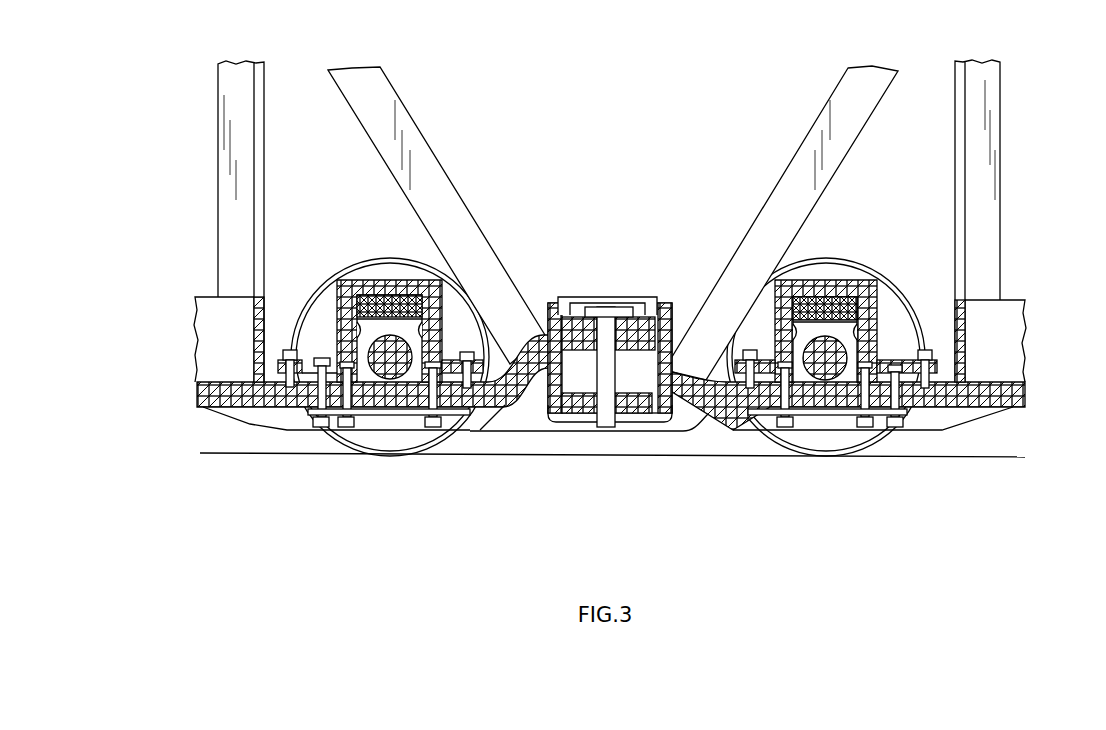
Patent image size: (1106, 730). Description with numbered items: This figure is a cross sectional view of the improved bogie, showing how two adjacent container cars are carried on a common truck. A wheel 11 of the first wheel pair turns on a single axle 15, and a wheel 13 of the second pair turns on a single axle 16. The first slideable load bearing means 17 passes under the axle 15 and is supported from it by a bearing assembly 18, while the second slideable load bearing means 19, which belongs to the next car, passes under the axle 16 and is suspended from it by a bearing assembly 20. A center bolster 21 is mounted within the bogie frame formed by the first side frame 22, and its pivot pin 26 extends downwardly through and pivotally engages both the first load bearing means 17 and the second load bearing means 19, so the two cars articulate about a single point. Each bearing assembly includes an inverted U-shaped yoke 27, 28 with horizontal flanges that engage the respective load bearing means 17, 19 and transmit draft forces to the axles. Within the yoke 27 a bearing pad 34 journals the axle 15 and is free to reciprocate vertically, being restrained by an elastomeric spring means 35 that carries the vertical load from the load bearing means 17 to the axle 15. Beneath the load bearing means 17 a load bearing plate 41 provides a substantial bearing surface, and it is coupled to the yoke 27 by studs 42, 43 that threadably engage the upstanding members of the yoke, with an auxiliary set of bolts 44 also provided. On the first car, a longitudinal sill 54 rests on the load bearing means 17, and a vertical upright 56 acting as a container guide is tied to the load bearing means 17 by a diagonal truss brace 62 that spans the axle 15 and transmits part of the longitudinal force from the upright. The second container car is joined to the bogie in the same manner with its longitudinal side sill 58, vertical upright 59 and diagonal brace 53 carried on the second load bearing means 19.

The wheel 11 is at (433, 448).
The wheel 13 is at (855, 455).
The axle 15 is at (367, 350).
The axle 16 is at (850, 346).
The first slideable load bearing means 17 is at (203, 393).
The bearing assembly 18 is at (366, 254).
The second slideable load bearing means 19 is at (1022, 393).
The bearing assembly 20 is at (839, 252).
The center bolster 21 is at (670, 306).
The first side frame 22 is at (542, 432).
The pivot pin 26 is at (613, 300).
The inverted U-shaped yoke 27 is at (357, 300).
The inverted U-shaped yoke 28 is at (868, 296).
The bearing pad 34 is at (422, 327).
The elastomeric spring means 35 is at (443, 296).
The load bearing plate 41 is at (470, 417).
The stud 42 is at (350, 420).
The stud 43 is at (447, 427).
The auxiliary bolts 44 is at (312, 412).
The diagonal brace 53 is at (862, 72).
The longitudinal sill 54 is at (198, 320).
The vertical upright 56 is at (222, 193).
The longitudinal side sill 58 is at (1017, 346).
The vertical upright 59 is at (995, 186).
The diagonal truss brace 62 is at (372, 70).